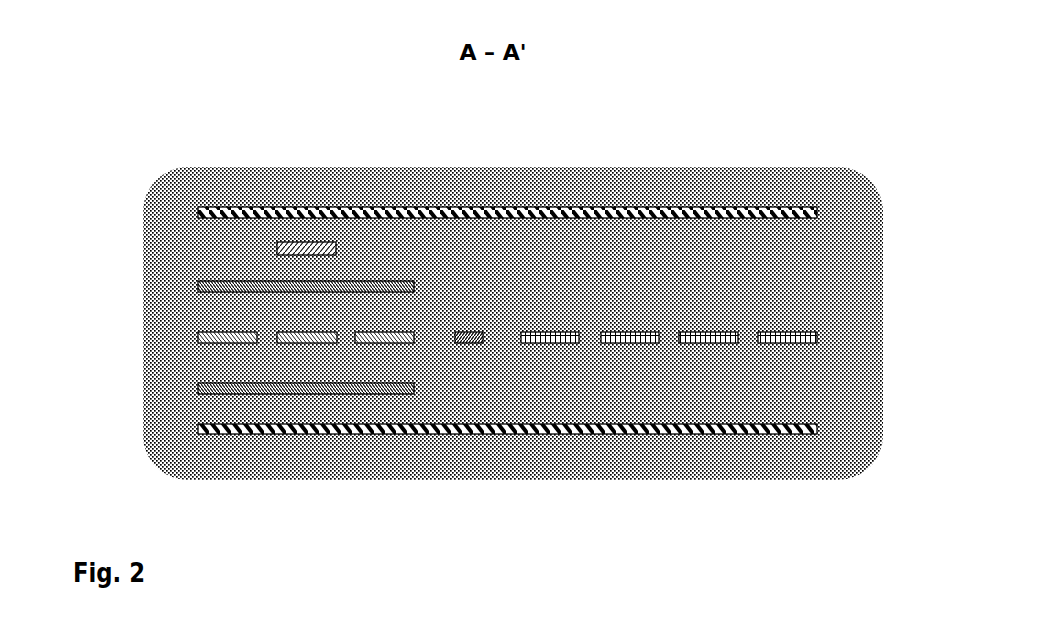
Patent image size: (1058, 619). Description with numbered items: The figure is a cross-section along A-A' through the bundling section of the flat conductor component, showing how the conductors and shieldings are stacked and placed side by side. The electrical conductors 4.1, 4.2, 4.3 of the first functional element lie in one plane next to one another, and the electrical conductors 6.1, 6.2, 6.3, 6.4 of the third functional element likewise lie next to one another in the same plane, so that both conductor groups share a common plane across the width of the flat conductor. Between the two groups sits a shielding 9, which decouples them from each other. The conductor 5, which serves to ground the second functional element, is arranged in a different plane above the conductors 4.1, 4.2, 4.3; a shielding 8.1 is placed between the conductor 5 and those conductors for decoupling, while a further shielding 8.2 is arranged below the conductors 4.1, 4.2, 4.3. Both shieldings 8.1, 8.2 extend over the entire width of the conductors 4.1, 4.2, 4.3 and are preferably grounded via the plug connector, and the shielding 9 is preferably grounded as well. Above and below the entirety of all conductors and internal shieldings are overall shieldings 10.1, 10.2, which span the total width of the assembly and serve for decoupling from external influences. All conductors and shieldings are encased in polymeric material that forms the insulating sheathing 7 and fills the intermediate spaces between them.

The insulating sheathing 7 is at (183, 182).
The overall shielding 10.1 is at (652, 213).
The overall shielding 10.2 is at (725, 432).
The conductor 5 is at (277, 250).
The shielding 8.1 is at (381, 283).
The shielding 8.2 is at (397, 385).
The electrical conductor 4.1 is at (198, 336).
The electrical conductor 4.2 is at (277, 343).
The electrical conductor 4.3 is at (355, 343).
The shielding 9 is at (470, 333).
The electrical conductor 6.1 is at (563, 332).
The electrical conductor 6.2 is at (635, 333).
The electrical conductor 6.3 is at (738, 333).
The electrical conductor 6.4 is at (817, 340).